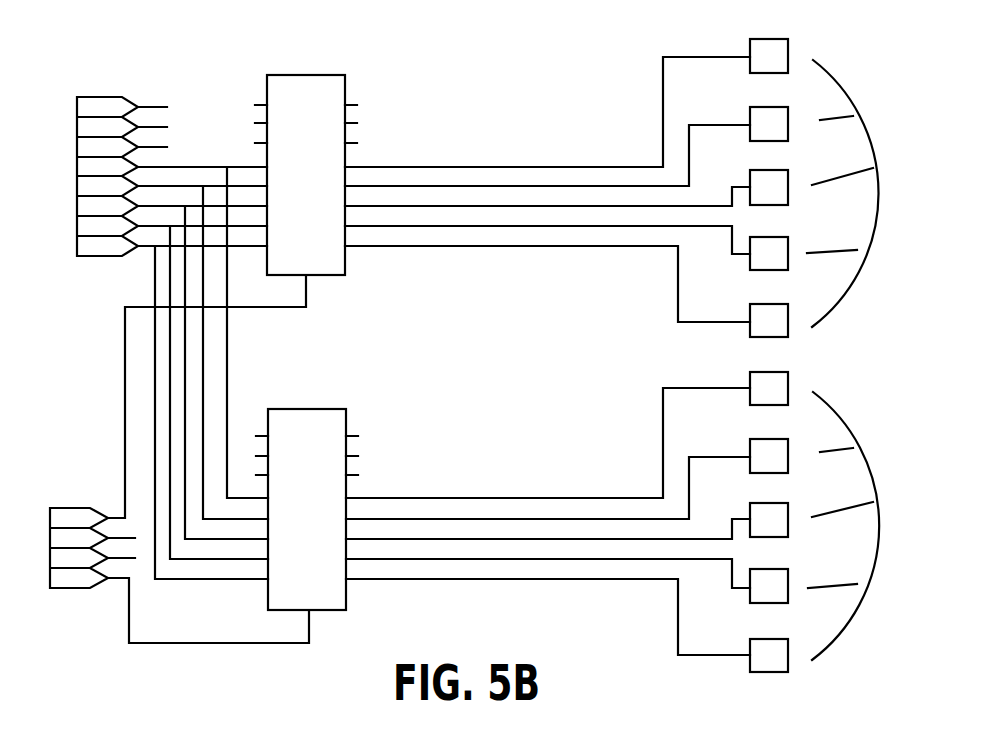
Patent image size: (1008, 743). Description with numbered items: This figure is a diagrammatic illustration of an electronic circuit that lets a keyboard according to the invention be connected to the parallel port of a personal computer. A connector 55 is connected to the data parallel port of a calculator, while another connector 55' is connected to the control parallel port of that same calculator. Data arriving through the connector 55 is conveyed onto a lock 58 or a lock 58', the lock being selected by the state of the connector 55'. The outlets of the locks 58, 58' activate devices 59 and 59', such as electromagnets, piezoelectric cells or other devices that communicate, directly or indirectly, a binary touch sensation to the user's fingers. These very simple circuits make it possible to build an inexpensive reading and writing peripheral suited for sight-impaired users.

The connector 55 is at (122, 146).
The lock 58 is at (355, 173).
The devices 59 is at (864, 193).
The connector 55' is at (92, 483).
The lock 58' is at (367, 483).
The devices 59' is at (868, 526).